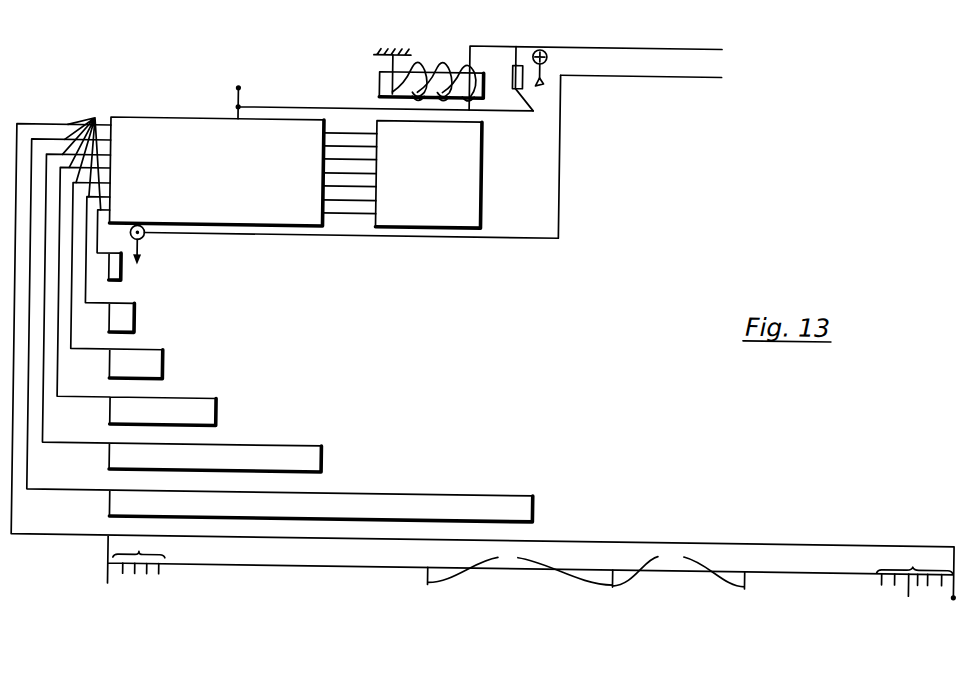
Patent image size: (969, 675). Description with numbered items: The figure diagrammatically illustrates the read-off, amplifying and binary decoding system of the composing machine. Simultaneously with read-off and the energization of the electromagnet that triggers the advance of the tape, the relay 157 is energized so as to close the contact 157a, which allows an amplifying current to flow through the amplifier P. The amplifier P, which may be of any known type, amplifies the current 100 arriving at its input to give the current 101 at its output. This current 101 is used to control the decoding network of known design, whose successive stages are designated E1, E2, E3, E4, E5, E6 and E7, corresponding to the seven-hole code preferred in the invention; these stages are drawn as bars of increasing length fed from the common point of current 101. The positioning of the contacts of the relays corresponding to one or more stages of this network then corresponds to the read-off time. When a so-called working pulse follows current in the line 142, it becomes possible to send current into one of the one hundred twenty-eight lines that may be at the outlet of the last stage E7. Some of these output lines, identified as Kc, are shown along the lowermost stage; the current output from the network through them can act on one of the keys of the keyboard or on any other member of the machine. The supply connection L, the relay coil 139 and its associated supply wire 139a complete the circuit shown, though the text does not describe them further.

The current 100 is at (362, 210).
The current 101 is at (85, 154).
The relay coil 139 is at (427, 76).
The relay supply line 139a is at (647, 41).
The current line 142 is at (507, 235).
The relay 157 is at (517, 86).
The contact 157a is at (541, 82).
The amplifier P is at (258, 206).
The line terminal L is at (383, 94).
The first decoding stage E1 is at (117, 272).
The second decoding stage E2 is at (130, 322).
The third decoding stage E3 is at (152, 363).
The fourth decoding stage E4 is at (207, 411).
The fifth decoding stage E5 is at (310, 457).
The sixth decoding stage E6 is at (510, 503).
The seventh decoding stage E7 is at (826, 535).
The output lines Kc is at (532, 567).